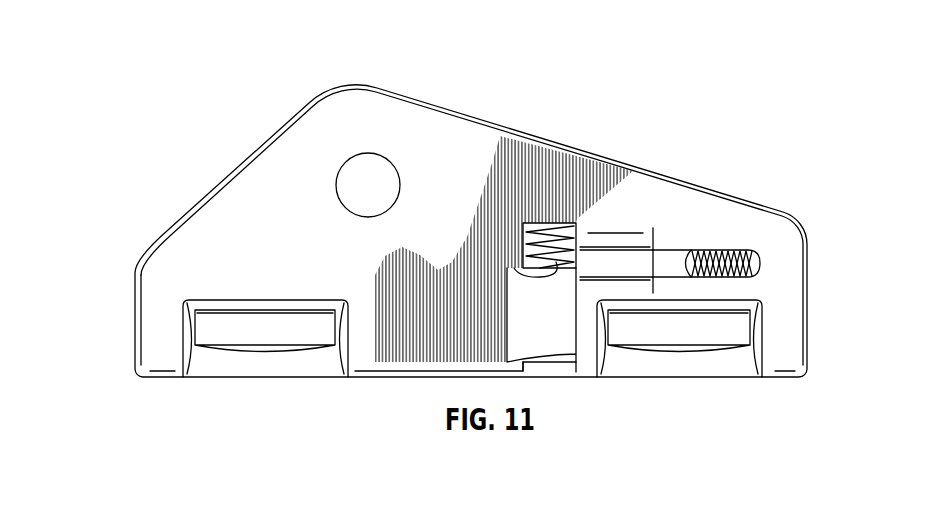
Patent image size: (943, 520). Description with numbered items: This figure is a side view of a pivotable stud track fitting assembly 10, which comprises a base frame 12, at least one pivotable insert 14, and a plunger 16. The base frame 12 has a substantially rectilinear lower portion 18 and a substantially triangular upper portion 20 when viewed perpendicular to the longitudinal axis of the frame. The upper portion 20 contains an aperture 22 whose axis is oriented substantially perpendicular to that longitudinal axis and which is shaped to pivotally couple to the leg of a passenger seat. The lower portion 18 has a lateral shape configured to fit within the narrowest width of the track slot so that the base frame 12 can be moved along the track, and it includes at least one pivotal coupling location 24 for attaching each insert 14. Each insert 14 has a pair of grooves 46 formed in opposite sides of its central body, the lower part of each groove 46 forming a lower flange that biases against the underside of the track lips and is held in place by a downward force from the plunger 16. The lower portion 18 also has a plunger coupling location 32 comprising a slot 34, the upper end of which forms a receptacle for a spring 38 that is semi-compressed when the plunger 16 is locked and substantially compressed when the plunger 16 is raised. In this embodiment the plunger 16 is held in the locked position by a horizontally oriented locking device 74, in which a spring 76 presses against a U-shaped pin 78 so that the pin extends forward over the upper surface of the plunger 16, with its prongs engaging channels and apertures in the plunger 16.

The pivotable stud track fitting assembly 10 is at (747, 113).
The base frame 12 is at (158, 265).
The pivotable insert 14 is at (203, 360).
The plunger 16 is at (557, 342).
The lower portion 18 is at (145, 328).
The upper portion 20 is at (265, 178).
The aperture 22 is at (347, 168).
The pivotal coupling location 24 is at (183, 327).
The plunger coupling location 32 is at (574, 221).
The slot 34 is at (523, 223).
The spring 38 is at (551, 222).
The groove 46 is at (273, 330).
The locking device 74 is at (667, 253).
The spring 76 is at (737, 265).
The U-shaped pin 78 is at (692, 255).